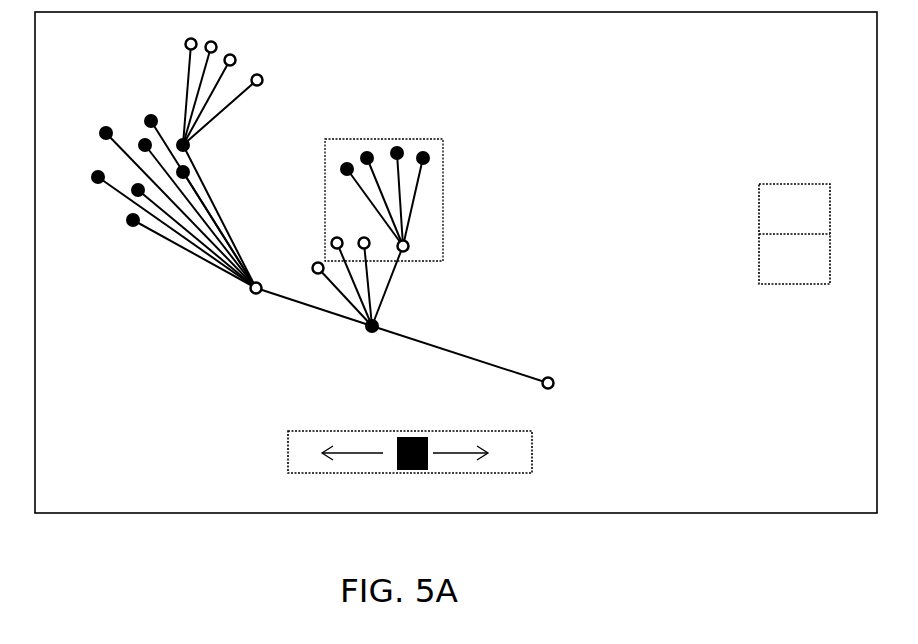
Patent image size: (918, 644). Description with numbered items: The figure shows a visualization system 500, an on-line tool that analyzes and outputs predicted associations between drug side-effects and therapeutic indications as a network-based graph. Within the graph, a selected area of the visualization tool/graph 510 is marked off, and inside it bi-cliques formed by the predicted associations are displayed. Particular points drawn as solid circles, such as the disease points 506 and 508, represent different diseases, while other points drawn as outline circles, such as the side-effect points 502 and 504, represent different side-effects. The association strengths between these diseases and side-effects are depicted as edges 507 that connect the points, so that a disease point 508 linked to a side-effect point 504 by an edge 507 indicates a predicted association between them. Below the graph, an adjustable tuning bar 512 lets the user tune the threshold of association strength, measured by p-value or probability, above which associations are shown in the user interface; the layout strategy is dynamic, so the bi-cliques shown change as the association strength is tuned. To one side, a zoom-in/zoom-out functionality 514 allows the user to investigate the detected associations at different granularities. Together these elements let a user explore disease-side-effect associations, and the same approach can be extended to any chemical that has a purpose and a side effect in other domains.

The visualization system 500 is at (746, 63).
The side-effect point 502 is at (360, 240).
The side-effect point 504 is at (411, 246).
The disease point 506 is at (394, 140).
The edge 507 is at (420, 180).
The disease point 508 is at (426, 140).
The selected area of the visualization tool/graph 510 is at (456, 207).
The adjustable tuning bar 512 is at (549, 455).
The zoom-in/zoom-out functionality 514 is at (739, 236).